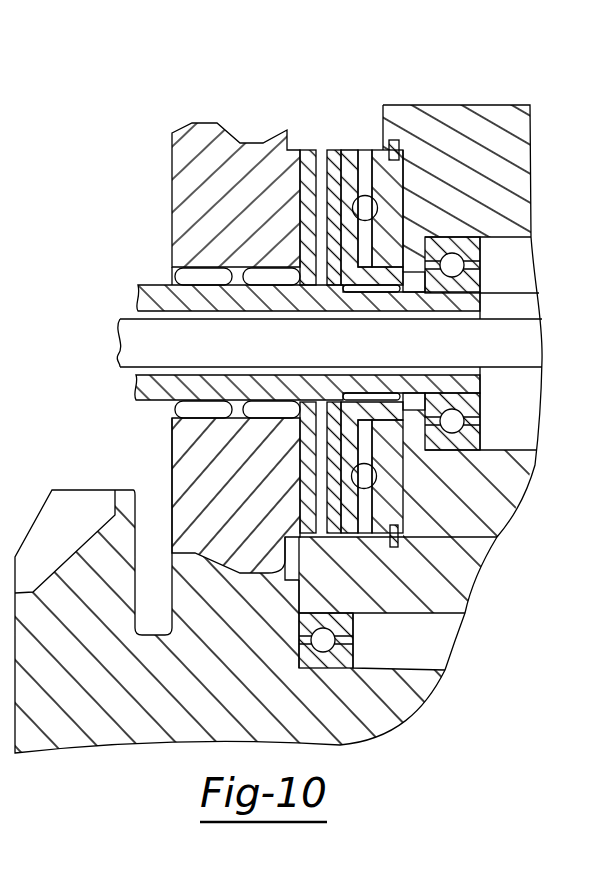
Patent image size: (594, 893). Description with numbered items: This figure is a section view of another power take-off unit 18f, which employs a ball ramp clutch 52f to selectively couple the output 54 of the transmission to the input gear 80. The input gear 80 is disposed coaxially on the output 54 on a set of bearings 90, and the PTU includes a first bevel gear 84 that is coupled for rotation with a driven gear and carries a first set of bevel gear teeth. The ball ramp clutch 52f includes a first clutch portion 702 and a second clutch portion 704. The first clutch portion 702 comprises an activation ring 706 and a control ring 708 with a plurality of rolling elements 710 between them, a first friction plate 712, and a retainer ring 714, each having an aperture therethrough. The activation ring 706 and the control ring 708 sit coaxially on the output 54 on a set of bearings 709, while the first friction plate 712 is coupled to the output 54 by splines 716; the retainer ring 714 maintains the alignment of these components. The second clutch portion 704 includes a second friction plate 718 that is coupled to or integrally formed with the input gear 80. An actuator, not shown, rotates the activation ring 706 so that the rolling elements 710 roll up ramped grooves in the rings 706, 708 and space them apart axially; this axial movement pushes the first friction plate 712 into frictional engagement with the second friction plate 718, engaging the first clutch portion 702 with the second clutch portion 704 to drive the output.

The power take-off unit 18f is at (304, 282).
The ball ramp clutch 52f is at (407, 278).
The output of the transmission 54 is at (154, 286).
The input gear 80 is at (182, 481).
The first bevel gear 84 is at (70, 735).
The bearings 90 is at (190, 412).
The first clutch portion 702 is at (352, 542).
The second clutch portion 704 is at (304, 540).
The activation ring 706 is at (350, 150).
The control ring 708 is at (393, 176).
The bearings 709 is at (387, 401).
The rolling elements 710 is at (378, 208).
The first friction plate 712 is at (337, 150).
The retainer ring 714 is at (408, 292).
The splines 716 is at (342, 290).
The second friction plate 718 is at (312, 150).